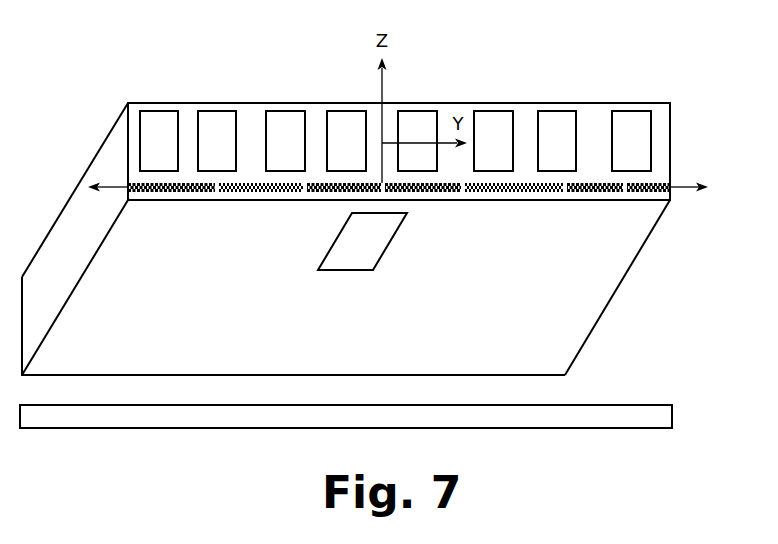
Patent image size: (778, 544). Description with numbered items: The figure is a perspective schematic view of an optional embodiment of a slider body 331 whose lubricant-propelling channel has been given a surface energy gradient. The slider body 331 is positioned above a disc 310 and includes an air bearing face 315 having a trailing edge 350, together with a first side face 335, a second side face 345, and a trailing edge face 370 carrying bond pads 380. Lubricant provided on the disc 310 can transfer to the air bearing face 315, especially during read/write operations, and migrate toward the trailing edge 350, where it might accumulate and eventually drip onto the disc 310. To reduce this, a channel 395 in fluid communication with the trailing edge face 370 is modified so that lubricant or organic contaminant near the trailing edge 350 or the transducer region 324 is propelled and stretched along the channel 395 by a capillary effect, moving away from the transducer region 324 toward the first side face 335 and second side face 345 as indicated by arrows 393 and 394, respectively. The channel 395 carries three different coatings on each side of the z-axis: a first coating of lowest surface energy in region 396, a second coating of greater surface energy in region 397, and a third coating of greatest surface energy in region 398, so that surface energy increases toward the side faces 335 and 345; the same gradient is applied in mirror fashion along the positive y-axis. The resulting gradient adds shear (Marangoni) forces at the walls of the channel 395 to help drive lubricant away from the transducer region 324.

The disc 310 is at (672, 412).
The air bearing face 315 is at (334, 321).
The transducer region 324 is at (345, 255).
The slider body 331 is at (640, 72).
The first side face 335 is at (47, 268).
The second side face 345 is at (580, 350).
The trailing edge 350 is at (672, 202).
The trailing edge face 370 is at (190, 120).
The bond pads 380 is at (287, 120).
The arrow 393 is at (118, 188).
The arrow 394 is at (680, 187).
The channel 395 is at (597, 210).
The region 396 is at (328, 210).
The region 397 is at (255, 210).
The region 398 is at (173, 210).